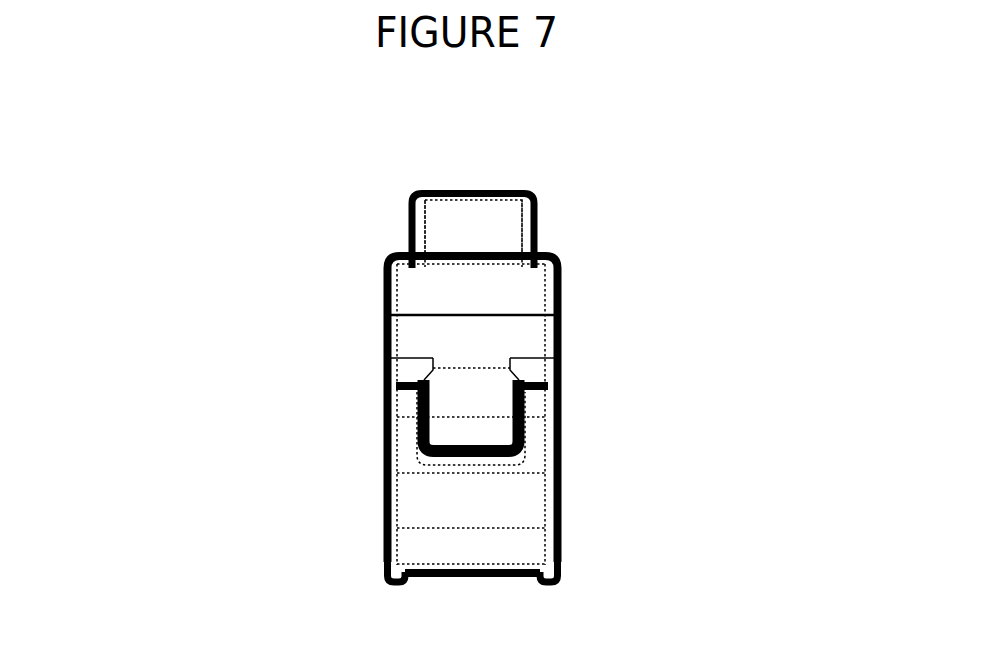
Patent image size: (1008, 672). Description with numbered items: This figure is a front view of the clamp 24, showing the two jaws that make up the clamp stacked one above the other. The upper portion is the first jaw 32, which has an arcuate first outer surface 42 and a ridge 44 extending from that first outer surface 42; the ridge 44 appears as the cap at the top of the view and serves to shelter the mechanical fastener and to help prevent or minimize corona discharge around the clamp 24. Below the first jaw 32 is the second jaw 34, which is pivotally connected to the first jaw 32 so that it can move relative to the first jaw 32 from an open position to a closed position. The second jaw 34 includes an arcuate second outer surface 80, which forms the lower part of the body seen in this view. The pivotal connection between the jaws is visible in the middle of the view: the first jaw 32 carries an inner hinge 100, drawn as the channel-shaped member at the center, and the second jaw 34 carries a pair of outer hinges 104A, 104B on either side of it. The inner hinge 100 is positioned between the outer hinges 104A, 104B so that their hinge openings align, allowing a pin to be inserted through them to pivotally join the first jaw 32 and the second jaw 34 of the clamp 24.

The clamp 24 is at (583, 190).
The ridge 44 is at (450, 233).
The first jaw 32 is at (572, 307).
The first outer surface 42 is at (452, 330).
The inner hinge 100 is at (468, 410).
The outer hinge 104A is at (545, 413).
The outer hinge 104B is at (392, 427).
The second outer surface 80 is at (424, 520).
The second jaw 34 is at (570, 552).